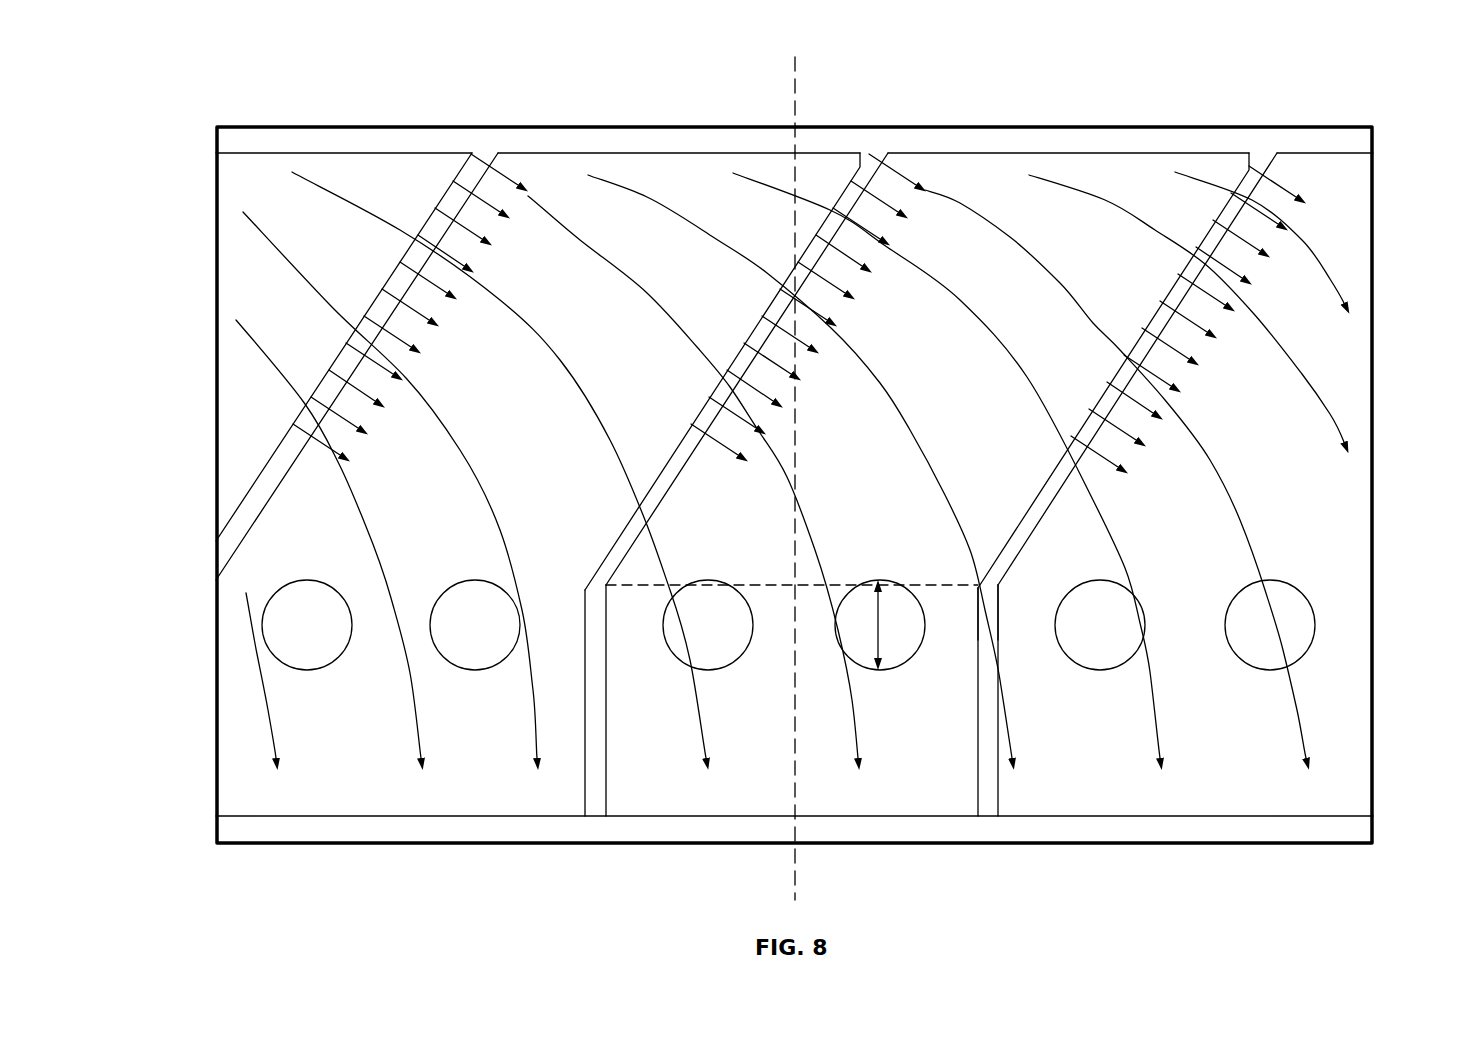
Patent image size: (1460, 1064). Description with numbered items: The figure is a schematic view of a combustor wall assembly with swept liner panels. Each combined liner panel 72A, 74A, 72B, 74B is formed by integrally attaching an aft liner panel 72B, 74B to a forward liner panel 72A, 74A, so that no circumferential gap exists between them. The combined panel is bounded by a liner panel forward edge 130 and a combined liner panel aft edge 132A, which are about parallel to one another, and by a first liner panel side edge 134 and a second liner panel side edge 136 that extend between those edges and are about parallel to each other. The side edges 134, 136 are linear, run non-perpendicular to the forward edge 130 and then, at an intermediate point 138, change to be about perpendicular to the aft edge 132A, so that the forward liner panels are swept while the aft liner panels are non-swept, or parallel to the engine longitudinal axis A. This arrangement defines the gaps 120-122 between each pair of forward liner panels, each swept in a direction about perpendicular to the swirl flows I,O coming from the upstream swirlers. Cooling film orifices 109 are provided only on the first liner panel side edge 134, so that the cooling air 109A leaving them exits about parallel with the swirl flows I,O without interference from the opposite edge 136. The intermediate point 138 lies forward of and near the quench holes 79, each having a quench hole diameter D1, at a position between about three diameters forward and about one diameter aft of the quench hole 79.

The outer forward liner panel 72A is at (764, 331).
The inner forward liner panel 74A is at (418, 170).
The outer aft liner panel 72B is at (700, 741).
The inner aft liner panel 74B is at (244, 744).
The cooling film orifice 109 is at (835, 217).
The cooling air 109A is at (880, 243).
The liner panel forward edge 130 is at (1140, 152).
The combined liner panel aft edge 132A is at (918, 820).
The first liner panel side edge 134 is at (1157, 325).
The second liner panel side edge 136 is at (820, 248).
The intermediate point 138 is at (998, 585).
The gaps 120-122 is at (777, 307).
The quench hole 79 is at (865, 668).
The quench hole diameter D1 is at (882, 645).
The engine longitudinal axis A is at (821, 478).
The swirl flows I,O is at (1309, 732).